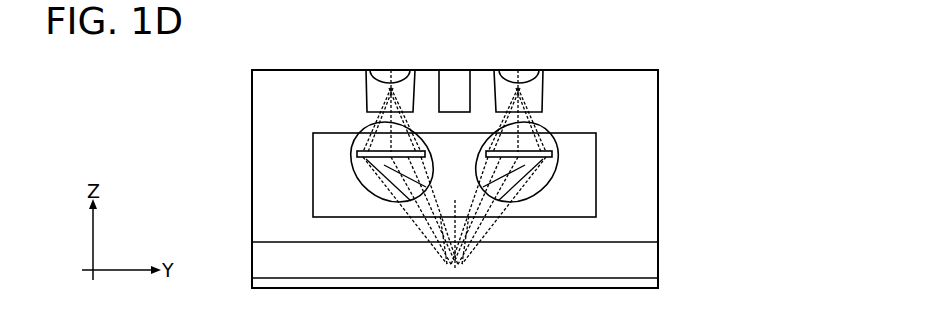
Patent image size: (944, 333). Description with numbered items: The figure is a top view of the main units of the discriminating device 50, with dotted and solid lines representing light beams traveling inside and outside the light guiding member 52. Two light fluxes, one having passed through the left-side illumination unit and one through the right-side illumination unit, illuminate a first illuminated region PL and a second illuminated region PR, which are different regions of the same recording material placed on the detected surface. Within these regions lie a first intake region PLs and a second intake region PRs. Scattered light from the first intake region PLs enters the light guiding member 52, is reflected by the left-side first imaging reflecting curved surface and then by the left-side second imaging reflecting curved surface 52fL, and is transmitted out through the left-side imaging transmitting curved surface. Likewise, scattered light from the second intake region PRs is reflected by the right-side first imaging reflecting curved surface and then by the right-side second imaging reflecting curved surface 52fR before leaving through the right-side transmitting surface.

The discriminating device 50 is at (230, 84).
The light guiding member 52 is at (262, 260).
The left-side second imaging reflecting curved surface 52fL is at (373, 87).
The right-side second imaging reflecting curved surface 52fR is at (537, 87).
The first illuminated region PL is at (376, 186).
The second illuminated region PR is at (535, 192).
The first intake region PLs is at (360, 170).
The second intake region PRs is at (548, 158).